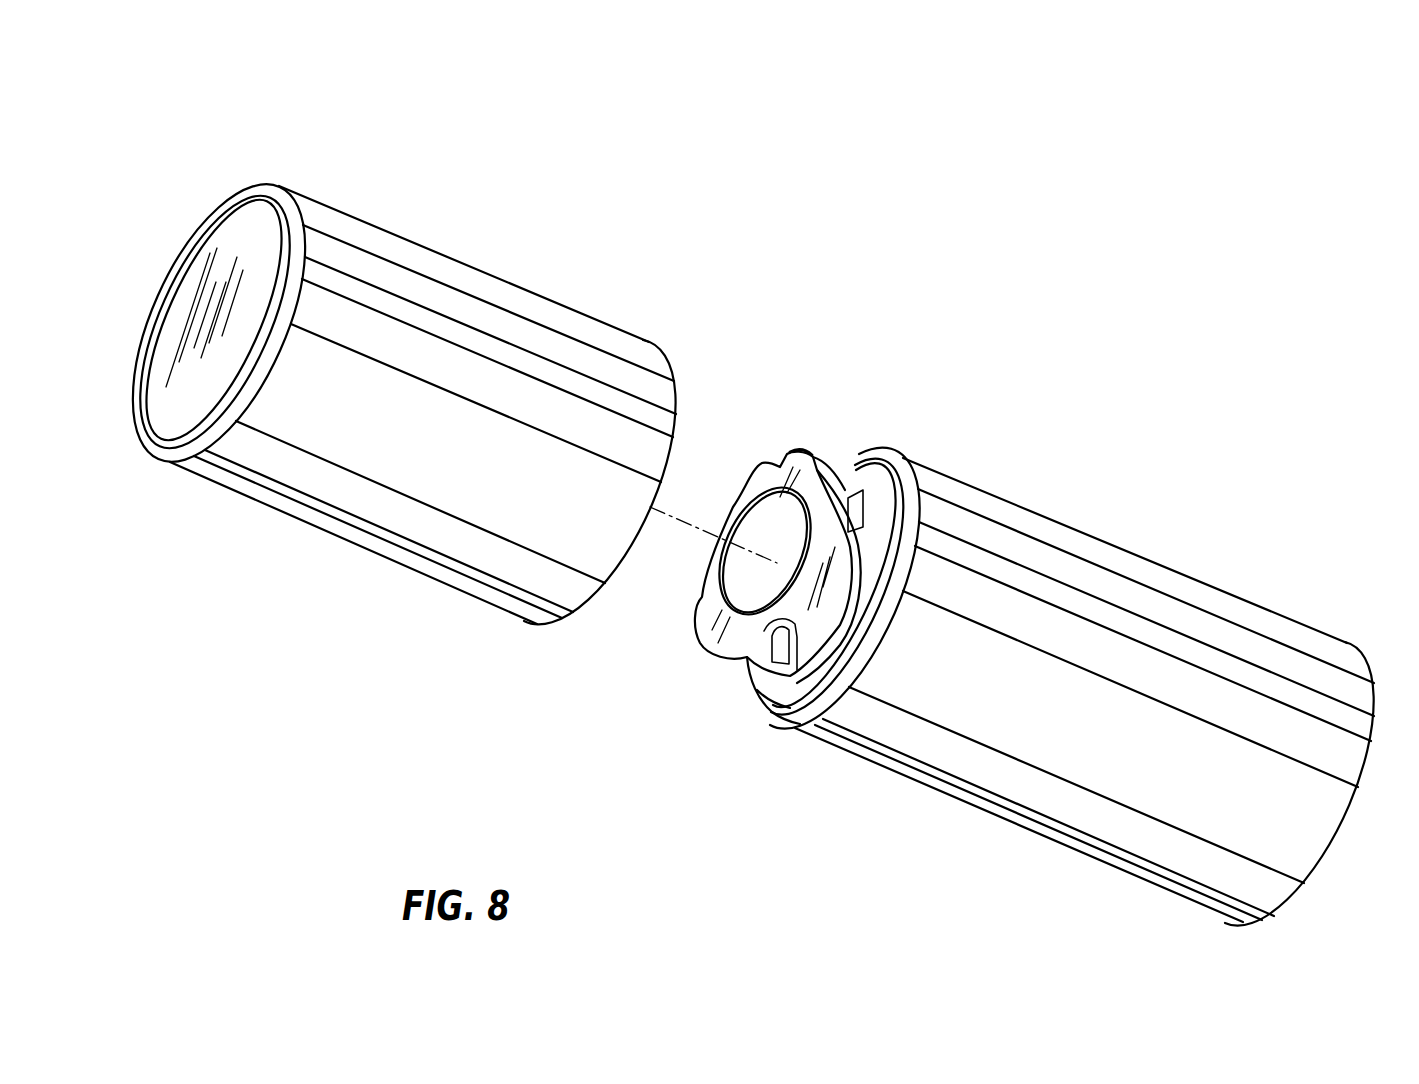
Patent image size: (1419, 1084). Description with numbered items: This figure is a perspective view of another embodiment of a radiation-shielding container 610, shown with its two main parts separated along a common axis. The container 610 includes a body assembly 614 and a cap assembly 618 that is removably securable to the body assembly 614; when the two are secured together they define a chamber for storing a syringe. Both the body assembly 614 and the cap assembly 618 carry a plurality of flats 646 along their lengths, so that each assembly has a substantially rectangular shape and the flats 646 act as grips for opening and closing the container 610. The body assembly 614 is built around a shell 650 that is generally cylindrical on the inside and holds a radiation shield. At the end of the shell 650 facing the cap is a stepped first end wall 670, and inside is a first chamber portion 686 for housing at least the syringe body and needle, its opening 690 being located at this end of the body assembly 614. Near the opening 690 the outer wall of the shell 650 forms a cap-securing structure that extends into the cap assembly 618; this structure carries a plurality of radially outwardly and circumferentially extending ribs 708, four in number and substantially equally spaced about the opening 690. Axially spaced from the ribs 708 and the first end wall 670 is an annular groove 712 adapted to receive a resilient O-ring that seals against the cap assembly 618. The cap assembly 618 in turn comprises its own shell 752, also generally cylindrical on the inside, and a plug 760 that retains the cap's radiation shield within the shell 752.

The container 610 is at (886, 205).
The body assembly 614 is at (1170, 500).
The cap assembly 618 is at (405, 160).
The flats 646 is at (503, 300).
The shell 650 is at (1320, 815).
The first end wall 670 is at (693, 603).
The first chamber portion 686 is at (770, 540).
The opening 690 is at (795, 453).
The ribs 708 is at (898, 458).
The annular groove 712 is at (803, 683).
The shell 752 is at (447, 565).
The plug 760 is at (178, 312).